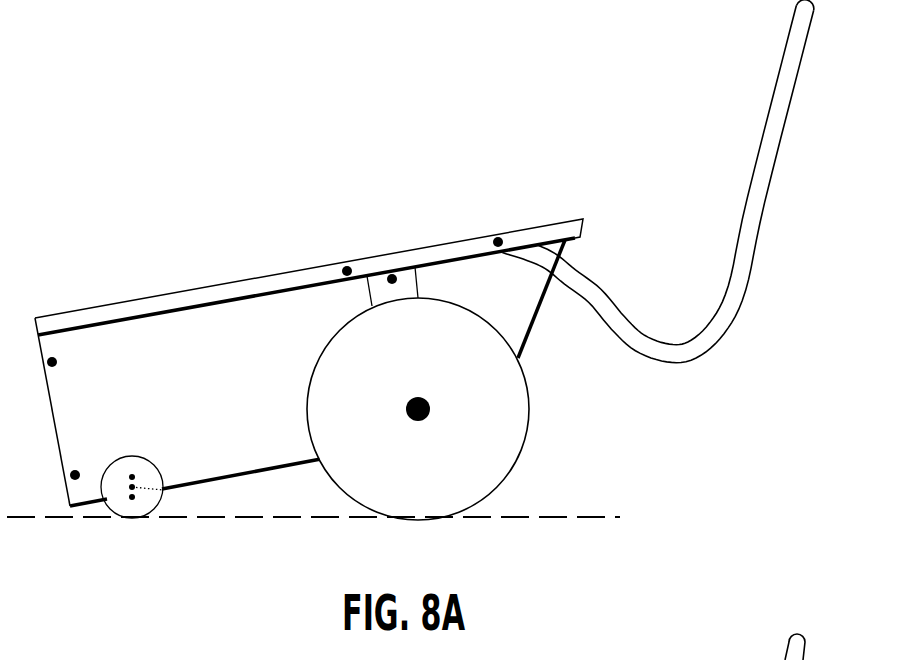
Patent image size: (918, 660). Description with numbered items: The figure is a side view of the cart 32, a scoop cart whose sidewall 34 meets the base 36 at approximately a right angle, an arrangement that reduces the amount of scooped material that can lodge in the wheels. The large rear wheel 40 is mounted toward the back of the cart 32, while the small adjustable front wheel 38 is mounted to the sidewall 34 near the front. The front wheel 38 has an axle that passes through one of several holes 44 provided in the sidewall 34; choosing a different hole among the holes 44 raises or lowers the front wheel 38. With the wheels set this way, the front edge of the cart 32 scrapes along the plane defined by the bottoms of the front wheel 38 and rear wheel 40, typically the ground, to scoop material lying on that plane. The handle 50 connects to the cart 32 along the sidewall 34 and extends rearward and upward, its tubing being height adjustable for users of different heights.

The cart 32 is at (283, 180).
The sidewall 34 is at (138, 379).
The base 36 is at (242, 478).
The front wheel 38 is at (132, 514).
The rear wheel 40 is at (512, 430).
The holes 44 is at (130, 479).
The handle 50 is at (777, 88).